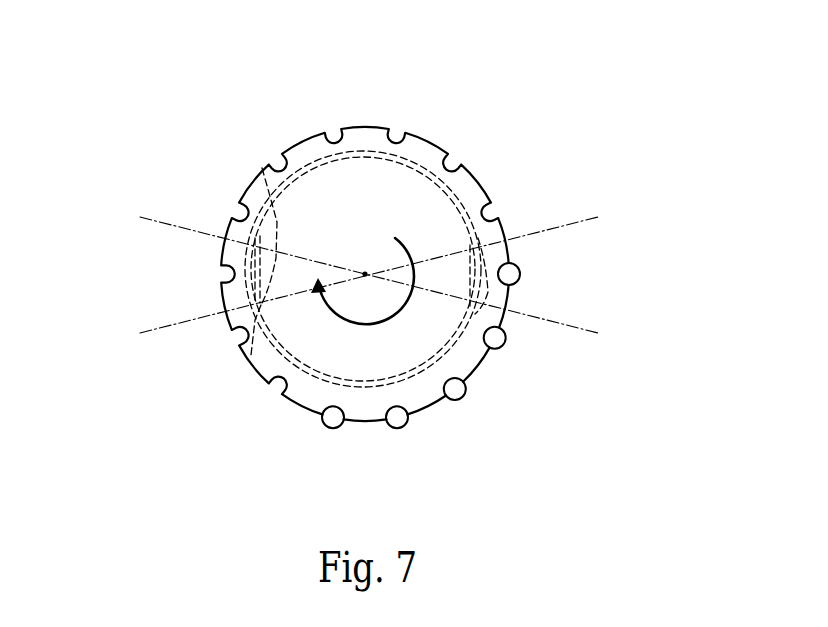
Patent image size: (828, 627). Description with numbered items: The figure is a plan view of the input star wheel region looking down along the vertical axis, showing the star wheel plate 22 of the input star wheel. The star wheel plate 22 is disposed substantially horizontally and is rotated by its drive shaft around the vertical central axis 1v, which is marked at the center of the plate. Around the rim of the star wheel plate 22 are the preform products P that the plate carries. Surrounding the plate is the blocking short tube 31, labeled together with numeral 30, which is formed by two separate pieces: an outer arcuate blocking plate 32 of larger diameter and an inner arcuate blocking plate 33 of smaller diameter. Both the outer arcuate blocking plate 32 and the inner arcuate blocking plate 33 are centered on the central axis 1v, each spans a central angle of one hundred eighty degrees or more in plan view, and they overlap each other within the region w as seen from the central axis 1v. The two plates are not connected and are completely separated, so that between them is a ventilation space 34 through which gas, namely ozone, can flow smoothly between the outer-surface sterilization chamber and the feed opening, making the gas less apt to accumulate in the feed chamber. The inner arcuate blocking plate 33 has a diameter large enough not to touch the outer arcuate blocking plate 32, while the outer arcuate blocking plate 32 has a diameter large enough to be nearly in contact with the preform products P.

The star wheel plate 22 is at (466, 189).
The preform products P is at (509, 274).
The central axis 1v is at (362, 271).
The transfer hand 30 is at (351, 208).
The blocking short tube 31 is at (338, 70).
The outer arcuate blocking plate 32 is at (336, 152).
The inner arcuate blocking plate 33 is at (262, 168).
The ventilation space 34 is at (251, 355).
The region w is at (136, 216).